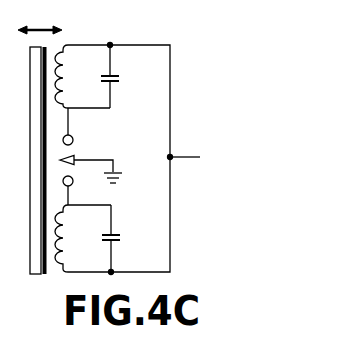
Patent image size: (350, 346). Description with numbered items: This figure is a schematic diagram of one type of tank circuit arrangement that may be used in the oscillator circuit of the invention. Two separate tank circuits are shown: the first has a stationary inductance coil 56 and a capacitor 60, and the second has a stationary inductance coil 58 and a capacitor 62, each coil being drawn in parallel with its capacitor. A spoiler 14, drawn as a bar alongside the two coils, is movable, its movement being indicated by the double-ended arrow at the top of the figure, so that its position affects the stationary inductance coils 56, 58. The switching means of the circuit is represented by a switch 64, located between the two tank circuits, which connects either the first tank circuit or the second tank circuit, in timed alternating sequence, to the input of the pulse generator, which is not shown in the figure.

The spoiler 14 is at (30, 188).
The stationary inductance coil 56 is at (67, 82).
The stationary inductance coil 58 is at (67, 242).
The capacitor 60 is at (110, 76).
The capacitor 62 is at (113, 232).
The switch 64 is at (82, 159).